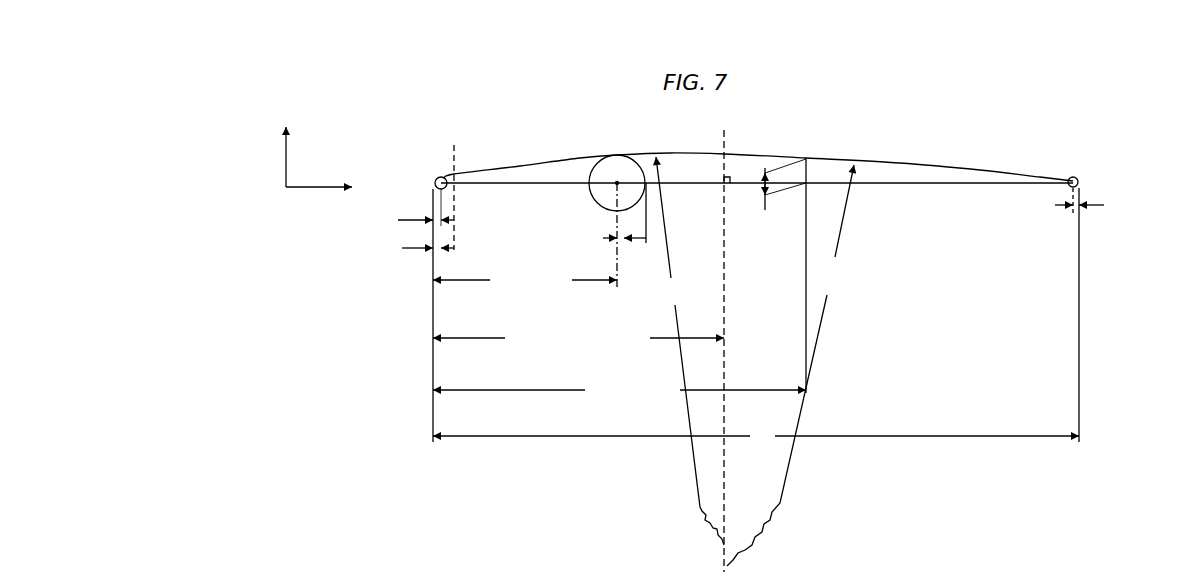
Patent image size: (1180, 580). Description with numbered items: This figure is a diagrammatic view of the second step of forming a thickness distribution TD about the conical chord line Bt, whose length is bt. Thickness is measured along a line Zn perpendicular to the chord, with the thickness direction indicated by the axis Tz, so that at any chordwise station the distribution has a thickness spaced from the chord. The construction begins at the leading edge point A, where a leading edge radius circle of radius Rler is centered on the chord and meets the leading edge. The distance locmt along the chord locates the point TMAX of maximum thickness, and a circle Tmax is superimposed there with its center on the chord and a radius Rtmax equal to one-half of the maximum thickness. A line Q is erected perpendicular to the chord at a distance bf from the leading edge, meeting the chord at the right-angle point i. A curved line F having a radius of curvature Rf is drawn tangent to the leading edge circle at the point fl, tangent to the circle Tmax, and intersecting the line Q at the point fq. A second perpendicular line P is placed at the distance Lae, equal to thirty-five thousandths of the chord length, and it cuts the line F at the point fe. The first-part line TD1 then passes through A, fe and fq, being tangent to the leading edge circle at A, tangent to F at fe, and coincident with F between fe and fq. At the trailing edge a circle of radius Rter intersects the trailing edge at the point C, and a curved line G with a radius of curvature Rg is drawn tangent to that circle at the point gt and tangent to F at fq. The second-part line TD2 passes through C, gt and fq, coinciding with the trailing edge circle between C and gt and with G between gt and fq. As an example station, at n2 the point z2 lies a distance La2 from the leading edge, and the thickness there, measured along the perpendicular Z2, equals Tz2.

The thickness axis Tz is at (288, 144).
The perpendicular line Zn is at (332, 188).
The leading edge point A is at (434, 184).
The trailing edge point C is at (1080, 183).
The maximum thickness circle Tmax is at (592, 168).
The location of maximum thickness TMAX is at (618, 182).
The leading edge radius Rler is at (401, 220).
The leading edge point distance Lae is at (361, 249).
The maximum thickness circle radius Rtmax is at (551, 237).
The distance to location of maximum thickness locmt is at (525, 280).
The distance to line Q bf is at (578, 338).
The distance to point z2 La2 is at (619, 390).
The conical chord line length bt is at (756, 436).
The trailing edge radius Rter is at (1097, 206).
The thickness at point z2 Tz2 is at (769, 197).
The radius of curvature of line F Rf is at (690, 351).
The radius of curvature of line G Rg is at (790, 365).
The tangent point on leading edge circle fl is at (438, 177).
The intersection point of line P and line F fe is at (452, 172).
The perpendicular line P is at (456, 170).
The line F is at (520, 165).
The line of the first part of the thickness distribution TD1 is at (630, 155).
The intersection point of line F and line Q fq is at (724, 153).
The perpendicular line Q is at (725, 152).
The intersection of line Q with the conical chord line i is at (723, 187).
The station n equals two n2 is at (806, 157).
The perpendicular line Z2 is at (807, 168).
The point z2 is at (808, 185).
The line of the second part of the thickness distribution TD2 is at (901, 160).
The line G is at (926, 166).
The thickness distribution TD is at (979, 168).
The conical chord line Bt is at (957, 186).
The tangent point on trailing edge circle gt is at (1079, 179).